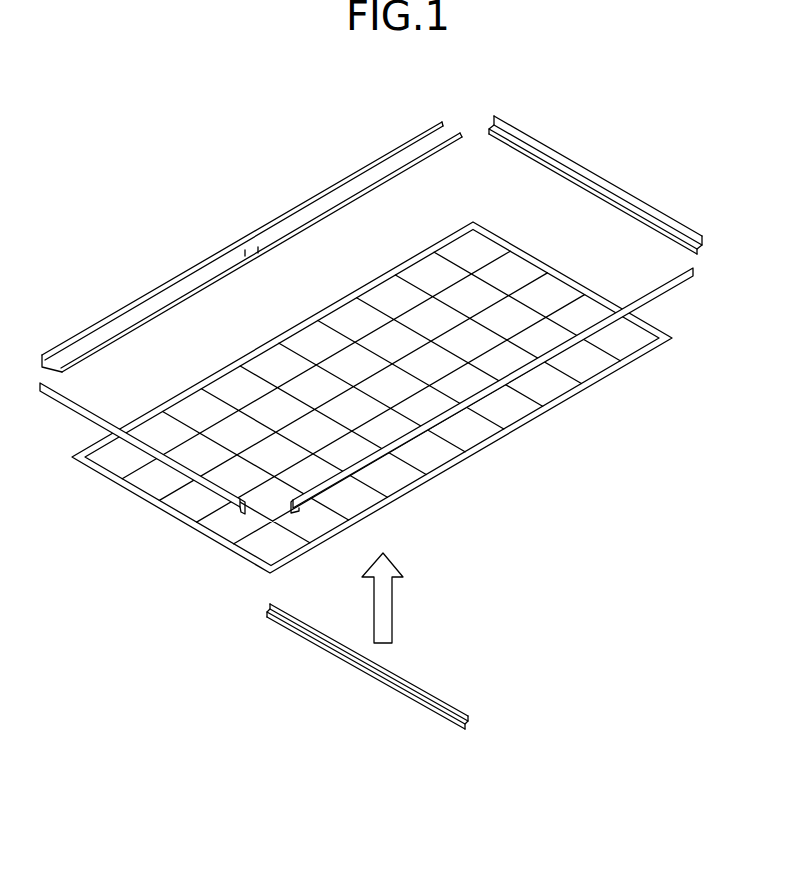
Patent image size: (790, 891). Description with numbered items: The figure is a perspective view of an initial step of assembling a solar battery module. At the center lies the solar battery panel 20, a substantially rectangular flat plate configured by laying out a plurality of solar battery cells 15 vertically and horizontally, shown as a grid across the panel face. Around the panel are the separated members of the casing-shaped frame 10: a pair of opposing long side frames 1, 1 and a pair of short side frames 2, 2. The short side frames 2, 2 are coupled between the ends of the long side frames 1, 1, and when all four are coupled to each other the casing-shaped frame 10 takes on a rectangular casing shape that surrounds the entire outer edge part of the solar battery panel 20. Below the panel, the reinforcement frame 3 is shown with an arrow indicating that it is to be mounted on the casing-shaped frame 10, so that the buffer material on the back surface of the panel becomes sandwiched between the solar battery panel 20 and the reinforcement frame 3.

The long side frame 1 is at (603, 333).
The short side frame 2 is at (584, 165).
The reinforcement frame 3 is at (375, 678).
The casing-shaped frame 10 is at (365, 166).
The solar battery cell 15 is at (397, 482).
The solar battery panel 20 is at (474, 220).